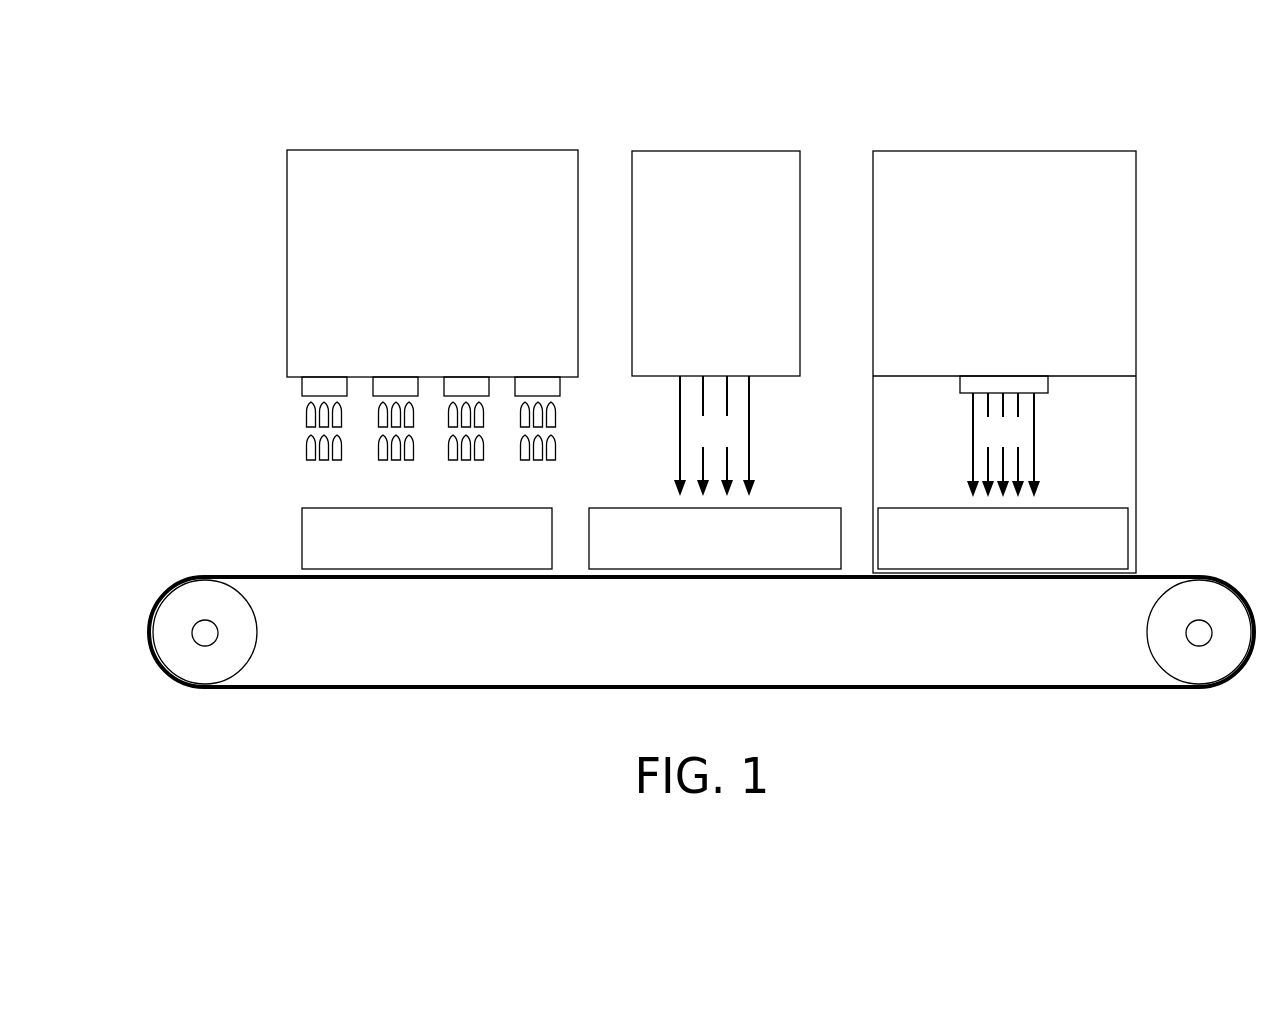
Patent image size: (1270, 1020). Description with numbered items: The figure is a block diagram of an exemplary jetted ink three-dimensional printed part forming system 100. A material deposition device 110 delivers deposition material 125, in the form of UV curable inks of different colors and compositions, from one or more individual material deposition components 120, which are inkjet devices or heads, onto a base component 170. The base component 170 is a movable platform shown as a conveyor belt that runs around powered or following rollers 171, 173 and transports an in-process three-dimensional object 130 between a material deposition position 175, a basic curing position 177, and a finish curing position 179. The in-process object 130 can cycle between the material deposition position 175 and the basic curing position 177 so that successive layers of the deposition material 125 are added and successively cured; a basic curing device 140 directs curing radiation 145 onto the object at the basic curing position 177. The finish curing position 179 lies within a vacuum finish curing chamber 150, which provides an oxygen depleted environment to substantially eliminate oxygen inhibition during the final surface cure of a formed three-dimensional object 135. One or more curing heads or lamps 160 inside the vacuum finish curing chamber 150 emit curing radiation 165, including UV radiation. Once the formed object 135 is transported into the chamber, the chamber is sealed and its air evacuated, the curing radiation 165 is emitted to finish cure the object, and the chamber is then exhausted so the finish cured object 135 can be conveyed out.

The jetted ink 3D printed part forming system 100 is at (303, 108).
The material deposition device 110 is at (432, 150).
The individual material deposition components 120 is at (323, 377).
The deposition material 125 is at (292, 460).
The in-process 3D object 130 is at (302, 538).
The formed 3D object 135 is at (1130, 543).
The basic curing device 140 is at (712, 150).
The curing radiation 145 is at (714, 436).
The vacuum finish curing chamber 150 is at (997, 150).
The curing heads or lamps 160 is at (1000, 376).
The curing radiation 165 is at (1003, 445).
The base component 170 is at (693, 688).
The roller 171 is at (200, 668).
The roller 173 is at (1193, 668).
The material deposition position 175 is at (419, 598).
The basic curing position 177 is at (720, 598).
The finish curing position 179 is at (1005, 598).